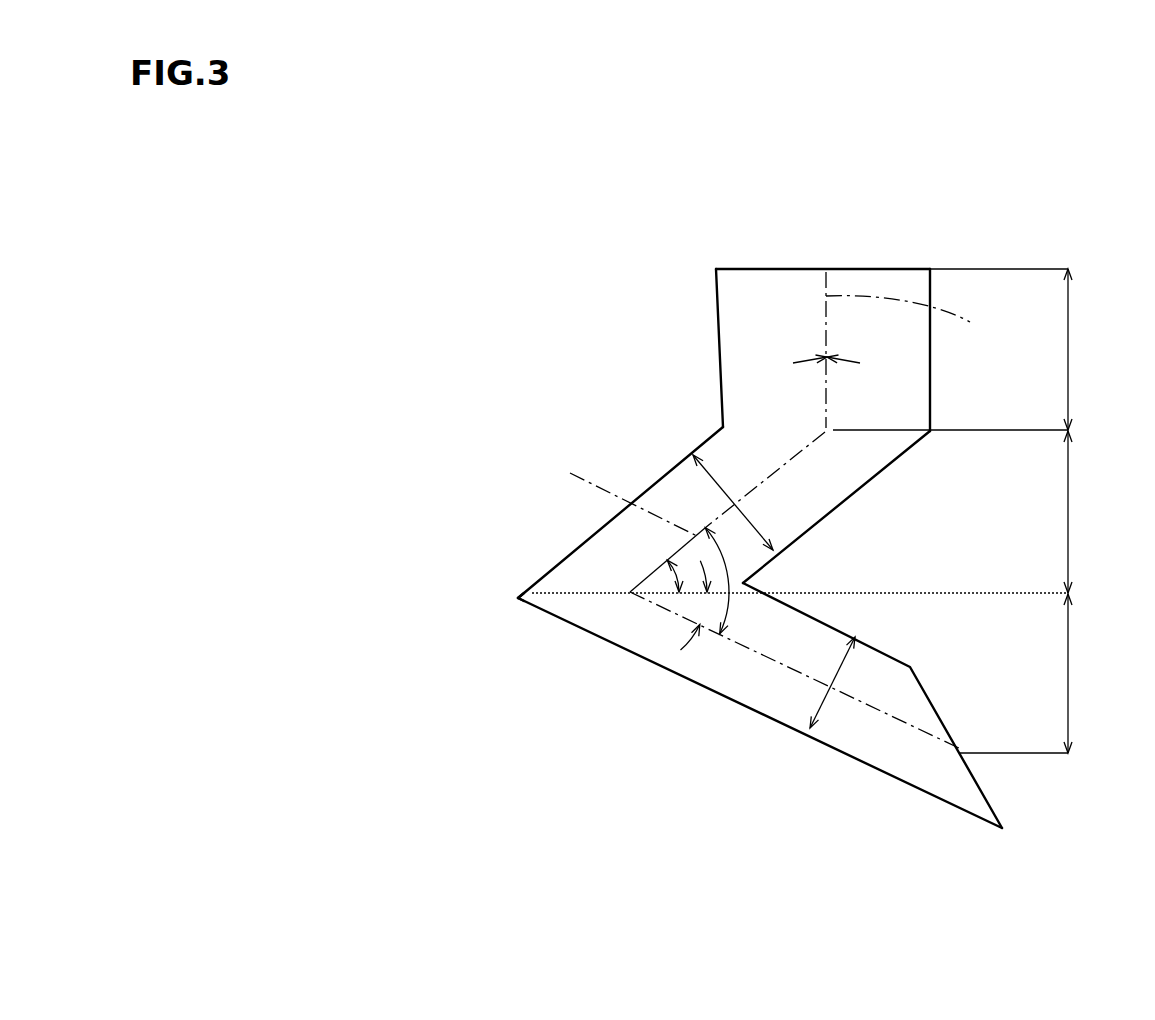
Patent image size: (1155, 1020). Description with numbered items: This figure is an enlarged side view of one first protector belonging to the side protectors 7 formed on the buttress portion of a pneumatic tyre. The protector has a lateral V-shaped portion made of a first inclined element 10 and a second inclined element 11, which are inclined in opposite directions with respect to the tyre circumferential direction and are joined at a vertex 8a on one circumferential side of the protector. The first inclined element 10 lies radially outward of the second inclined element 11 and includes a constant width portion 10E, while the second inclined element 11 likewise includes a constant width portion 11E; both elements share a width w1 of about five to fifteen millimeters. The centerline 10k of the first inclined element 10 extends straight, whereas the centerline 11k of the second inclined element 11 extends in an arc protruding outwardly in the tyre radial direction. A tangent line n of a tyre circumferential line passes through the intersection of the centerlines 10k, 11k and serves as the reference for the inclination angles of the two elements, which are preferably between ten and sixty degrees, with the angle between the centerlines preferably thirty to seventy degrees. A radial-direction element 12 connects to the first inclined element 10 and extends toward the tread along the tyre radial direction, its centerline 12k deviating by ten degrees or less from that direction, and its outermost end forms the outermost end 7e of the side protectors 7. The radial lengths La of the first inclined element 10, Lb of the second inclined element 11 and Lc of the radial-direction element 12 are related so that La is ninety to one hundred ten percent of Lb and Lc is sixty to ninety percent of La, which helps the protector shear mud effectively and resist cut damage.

The side protector 7 is at (975, 240).
The outermost end 7e is at (752, 268).
The radial-direction element 12 is at (778, 317).
The centerline 12k is at (927, 318).
The first inclined element 10 is at (825, 468).
The constant width portion 10E is at (737, 460).
The centerline 10k is at (606, 497).
The second inclined element 11 is at (877, 738).
The constant width portion 11E is at (782, 677).
The centerline 11k is at (945, 742).
The vertex 8a is at (518, 600).
The tangent line n is at (580, 595).
The width w1 is at (713, 487).
The length Lc is at (1019, 349).
The length La is at (971, 511).
The length Lb is at (1035, 673).